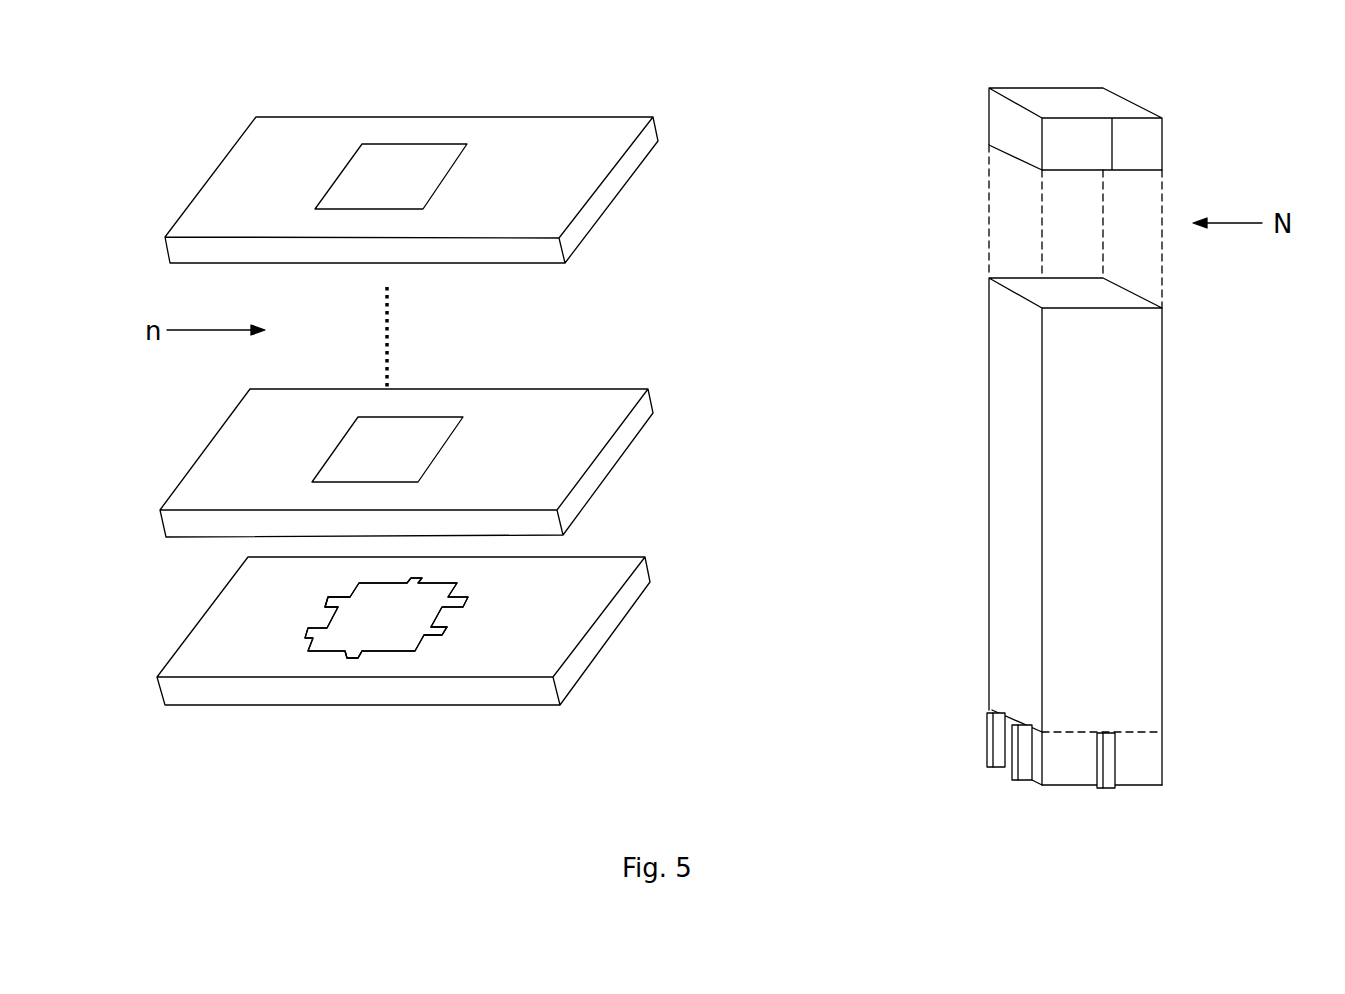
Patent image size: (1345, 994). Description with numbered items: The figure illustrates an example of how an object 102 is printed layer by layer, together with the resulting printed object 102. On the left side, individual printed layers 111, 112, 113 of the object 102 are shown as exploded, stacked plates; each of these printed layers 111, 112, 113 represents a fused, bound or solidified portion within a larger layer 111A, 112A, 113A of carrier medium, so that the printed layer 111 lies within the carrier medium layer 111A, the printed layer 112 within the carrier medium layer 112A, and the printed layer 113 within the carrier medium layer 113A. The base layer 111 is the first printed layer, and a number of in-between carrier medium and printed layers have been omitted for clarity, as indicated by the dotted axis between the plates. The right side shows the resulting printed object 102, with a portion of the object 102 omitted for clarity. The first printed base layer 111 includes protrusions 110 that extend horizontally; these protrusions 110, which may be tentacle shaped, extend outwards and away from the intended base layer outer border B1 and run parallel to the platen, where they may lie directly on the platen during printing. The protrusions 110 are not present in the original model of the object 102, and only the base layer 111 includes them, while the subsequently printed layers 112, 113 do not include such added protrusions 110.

The object 102 is at (1148, 513).
The protrusions 110 is at (332, 598).
The base layer 111 is at (345, 628).
The layer of carrier medium 111A is at (193, 658).
The printed layer 112 is at (408, 435).
The layer of carrier medium 112A is at (205, 480).
The printed layer 113 is at (380, 165).
The layer of carrier medium 113A is at (233, 185).
The base layer outer border B1 is at (398, 653).